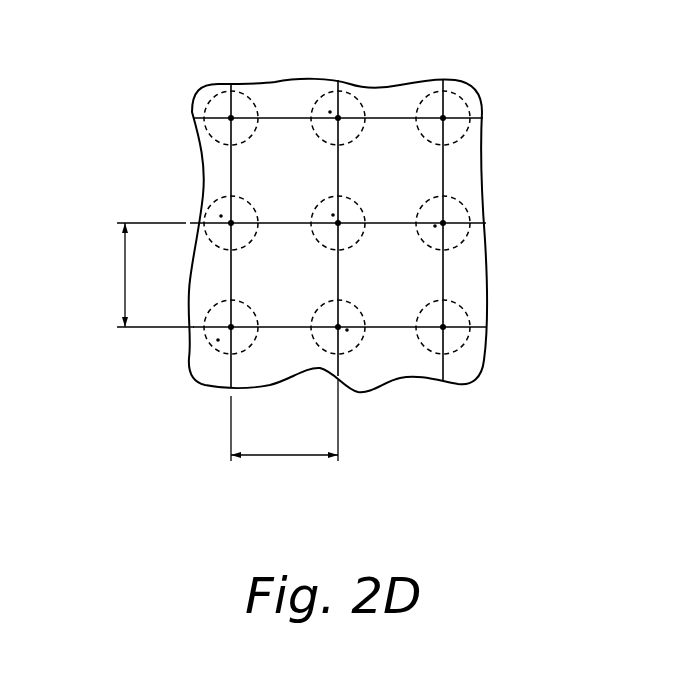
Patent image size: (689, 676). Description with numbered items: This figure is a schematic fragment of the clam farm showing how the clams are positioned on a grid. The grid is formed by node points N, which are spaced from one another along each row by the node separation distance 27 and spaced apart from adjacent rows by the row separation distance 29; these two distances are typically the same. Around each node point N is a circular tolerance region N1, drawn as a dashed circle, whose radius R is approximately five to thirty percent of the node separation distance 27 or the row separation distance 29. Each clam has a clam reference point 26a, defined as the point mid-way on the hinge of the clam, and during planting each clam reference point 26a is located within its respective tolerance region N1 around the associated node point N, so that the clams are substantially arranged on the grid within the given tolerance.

The clam reference point 26a is at (240, 108).
The node point N is at (231, 117).
The tolerance region N1 is at (206, 108).
The radius R is at (438, 115).
The node separation distance 27 is at (122, 278).
The row separation distance 29 is at (270, 456).